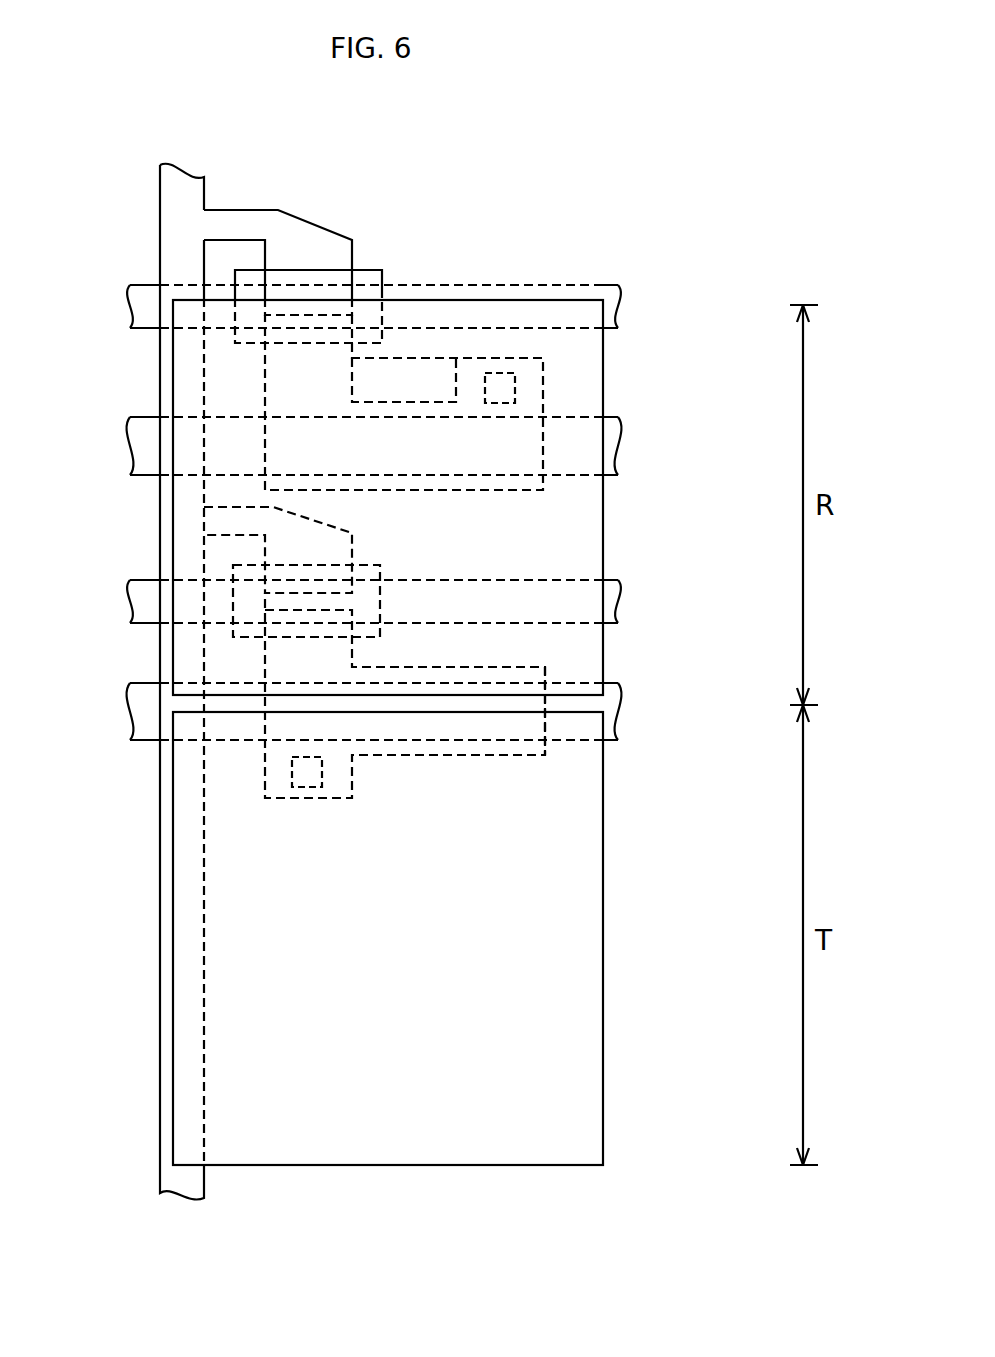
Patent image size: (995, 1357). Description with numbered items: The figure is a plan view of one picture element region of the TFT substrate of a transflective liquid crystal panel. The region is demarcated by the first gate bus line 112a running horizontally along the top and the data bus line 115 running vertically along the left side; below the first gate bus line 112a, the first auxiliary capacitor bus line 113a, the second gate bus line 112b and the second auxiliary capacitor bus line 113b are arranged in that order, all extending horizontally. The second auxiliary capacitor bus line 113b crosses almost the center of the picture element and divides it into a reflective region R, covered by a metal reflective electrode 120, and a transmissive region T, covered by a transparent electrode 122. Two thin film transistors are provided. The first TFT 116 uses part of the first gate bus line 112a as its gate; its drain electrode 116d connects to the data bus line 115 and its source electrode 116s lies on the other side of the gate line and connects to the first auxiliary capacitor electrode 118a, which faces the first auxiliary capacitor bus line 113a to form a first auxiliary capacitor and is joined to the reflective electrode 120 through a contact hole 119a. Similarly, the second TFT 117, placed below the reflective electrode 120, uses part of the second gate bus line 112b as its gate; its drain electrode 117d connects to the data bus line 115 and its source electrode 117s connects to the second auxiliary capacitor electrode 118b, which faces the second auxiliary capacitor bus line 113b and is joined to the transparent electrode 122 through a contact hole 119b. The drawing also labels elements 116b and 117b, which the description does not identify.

The data bus line 115 is at (168, 200).
The first gate bus line 112a is at (150, 287).
The second gate bus line 112b is at (150, 582).
The first auxiliary capacitor bus line 113a is at (150, 420).
The second auxiliary capacitor bus line 113b is at (150, 685).
The first TFT 116 is at (370, 234).
The drain electrode of first TFT 116d is at (305, 233).
The semiconductor layer of TFT 116 116b is at (373, 291).
The source electrode of first TFT 116s is at (350, 385).
The second TFT 117 is at (366, 561).
The drain electrode of second TFT 117d is at (300, 520).
The semiconductor layer of TFT 117 117b is at (375, 606).
The source electrode of second TFT 117s is at (345, 657).
The first auxiliary capacitor electrode 118a is at (543, 490).
The second auxiliary capacitor electrode 118b is at (545, 755).
The contact hole 119a is at (500, 380).
The contact hole 119b is at (310, 787).
The reflective electrode 120 is at (593, 381).
The transparent electrode 122 is at (593, 918).